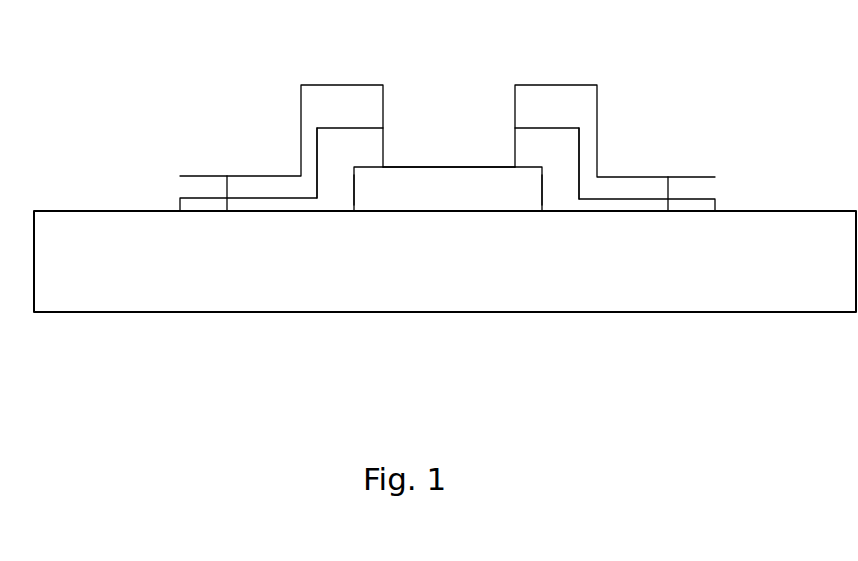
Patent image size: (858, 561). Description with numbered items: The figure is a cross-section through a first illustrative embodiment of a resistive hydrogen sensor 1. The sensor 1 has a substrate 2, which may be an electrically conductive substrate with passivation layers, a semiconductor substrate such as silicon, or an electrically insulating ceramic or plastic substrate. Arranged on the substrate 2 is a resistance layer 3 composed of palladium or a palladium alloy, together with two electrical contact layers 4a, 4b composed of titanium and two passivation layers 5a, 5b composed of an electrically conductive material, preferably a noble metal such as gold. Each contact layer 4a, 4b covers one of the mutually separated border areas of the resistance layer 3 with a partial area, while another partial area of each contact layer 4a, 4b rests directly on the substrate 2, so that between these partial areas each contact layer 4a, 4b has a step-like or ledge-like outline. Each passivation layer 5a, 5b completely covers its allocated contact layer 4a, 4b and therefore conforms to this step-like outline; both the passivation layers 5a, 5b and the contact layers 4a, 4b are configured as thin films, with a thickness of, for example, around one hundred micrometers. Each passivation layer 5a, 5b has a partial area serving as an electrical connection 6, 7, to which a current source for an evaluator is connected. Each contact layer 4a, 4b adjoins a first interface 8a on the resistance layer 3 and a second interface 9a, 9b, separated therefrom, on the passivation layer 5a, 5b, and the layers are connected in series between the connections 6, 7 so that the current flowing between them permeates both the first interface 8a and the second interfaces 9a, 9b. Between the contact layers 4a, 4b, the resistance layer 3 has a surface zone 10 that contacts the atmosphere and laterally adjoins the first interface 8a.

The hydrogen sensor 1 is at (781, 459).
The substrate 2 is at (503, 300).
The resistance layer 3 is at (473, 207).
The first electrical contact layer 4a is at (191, 203).
The second electrical contact layer 4b is at (528, 150).
The first passivation layer 5a is at (191, 180).
The second passivation layer 5b is at (557, 95).
The electrical connection 6 is at (202, 172).
The electrical connection 7 is at (697, 174).
The first interface 8a is at (371, 171).
The second interface 9a is at (314, 152).
The second interface 9b is at (584, 161).
The surface zone 10 is at (453, 163).